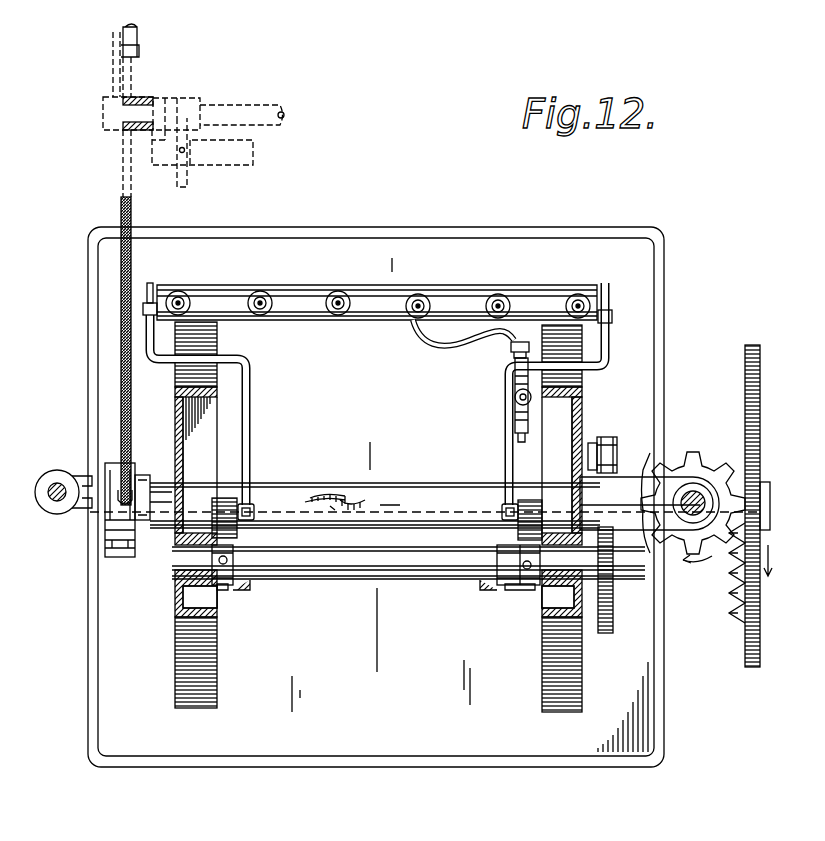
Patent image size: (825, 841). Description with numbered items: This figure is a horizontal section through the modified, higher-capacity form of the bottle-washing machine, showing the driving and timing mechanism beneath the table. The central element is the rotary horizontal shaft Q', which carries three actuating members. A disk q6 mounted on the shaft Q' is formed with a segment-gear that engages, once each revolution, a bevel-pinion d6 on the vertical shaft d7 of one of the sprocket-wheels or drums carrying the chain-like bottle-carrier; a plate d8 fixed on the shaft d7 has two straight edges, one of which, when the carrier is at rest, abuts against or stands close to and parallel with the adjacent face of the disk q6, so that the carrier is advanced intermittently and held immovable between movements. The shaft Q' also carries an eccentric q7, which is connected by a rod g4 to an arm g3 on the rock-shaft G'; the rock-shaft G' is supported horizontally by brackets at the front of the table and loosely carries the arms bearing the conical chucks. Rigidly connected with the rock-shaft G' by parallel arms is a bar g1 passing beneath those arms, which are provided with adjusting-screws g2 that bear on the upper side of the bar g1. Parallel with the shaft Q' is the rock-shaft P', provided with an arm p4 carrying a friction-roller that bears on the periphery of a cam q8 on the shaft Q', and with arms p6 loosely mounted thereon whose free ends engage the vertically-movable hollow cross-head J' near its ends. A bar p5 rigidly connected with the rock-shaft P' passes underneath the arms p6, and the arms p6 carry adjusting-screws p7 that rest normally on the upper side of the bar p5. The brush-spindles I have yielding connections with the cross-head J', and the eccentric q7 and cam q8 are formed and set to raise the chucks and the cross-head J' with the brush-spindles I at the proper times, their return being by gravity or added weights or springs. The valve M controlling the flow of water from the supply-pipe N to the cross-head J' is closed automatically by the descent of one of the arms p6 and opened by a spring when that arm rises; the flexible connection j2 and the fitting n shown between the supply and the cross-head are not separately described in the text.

The arm g3 is at (118, 62).
The rock-shaft G' is at (193, 105).
The adjusting-screws g2 is at (185, 151).
The bar g1 is at (190, 175).
The rod g4 is at (118, 318).
The brush-spindles I is at (182, 291).
The cross-head J' is at (377, 323).
The flexible hose j2 is at (443, 344).
The valve M is at (512, 354).
The supply-pipe N is at (515, 419).
The valve n is at (531, 400).
The arms p6 is at (251, 404).
The arm p4 is at (595, 437).
The adjusting-screws p7 is at (252, 504).
The bar p5 is at (346, 500).
The rotary horizontal shaft Q' is at (426, 493).
The rock-shaft P' is at (408, 578).
The bevel-pinion d6 is at (700, 460).
The vertical shaft d7 is at (65, 505).
The plate d8 is at (652, 542).
The disk q6 is at (760, 444).
The eccentric q7 is at (105, 536).
The cam q8 is at (617, 580).